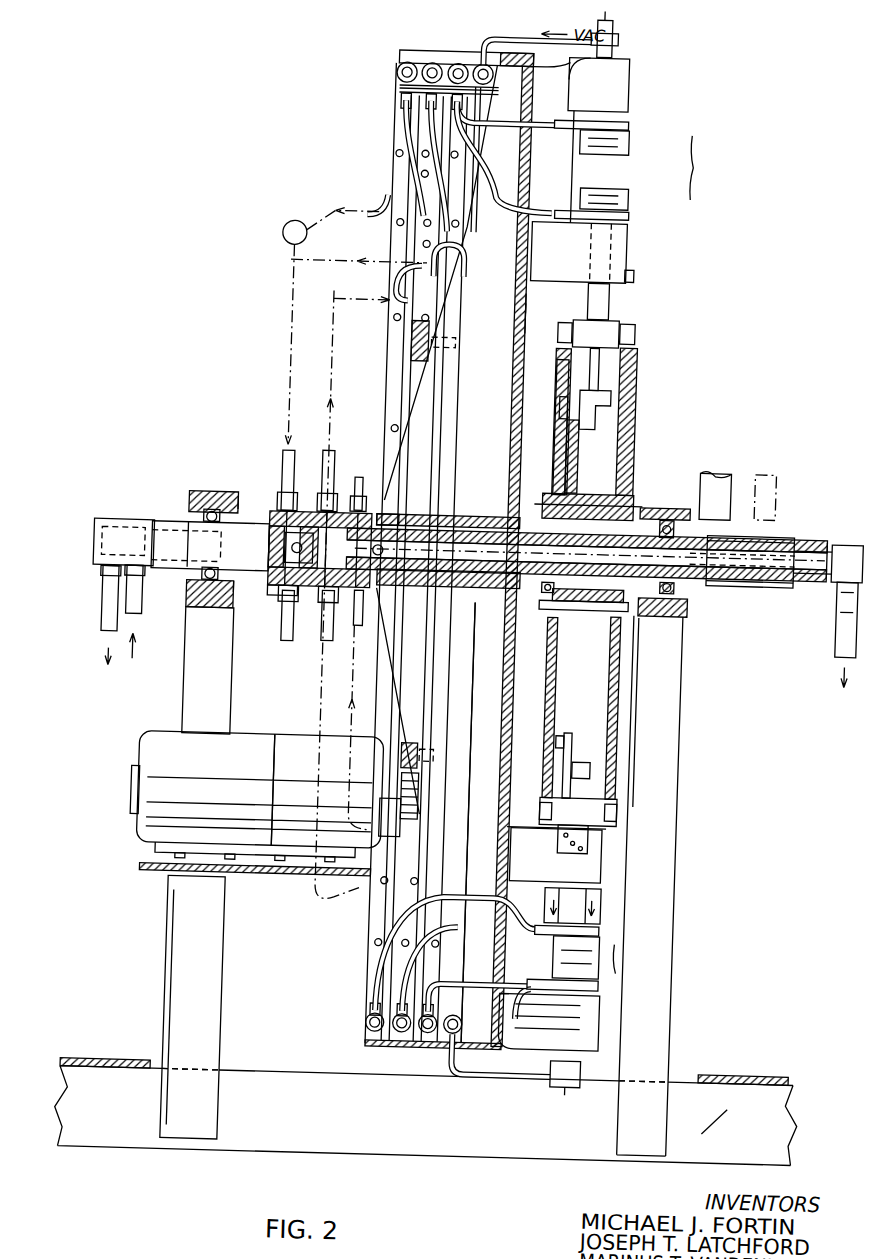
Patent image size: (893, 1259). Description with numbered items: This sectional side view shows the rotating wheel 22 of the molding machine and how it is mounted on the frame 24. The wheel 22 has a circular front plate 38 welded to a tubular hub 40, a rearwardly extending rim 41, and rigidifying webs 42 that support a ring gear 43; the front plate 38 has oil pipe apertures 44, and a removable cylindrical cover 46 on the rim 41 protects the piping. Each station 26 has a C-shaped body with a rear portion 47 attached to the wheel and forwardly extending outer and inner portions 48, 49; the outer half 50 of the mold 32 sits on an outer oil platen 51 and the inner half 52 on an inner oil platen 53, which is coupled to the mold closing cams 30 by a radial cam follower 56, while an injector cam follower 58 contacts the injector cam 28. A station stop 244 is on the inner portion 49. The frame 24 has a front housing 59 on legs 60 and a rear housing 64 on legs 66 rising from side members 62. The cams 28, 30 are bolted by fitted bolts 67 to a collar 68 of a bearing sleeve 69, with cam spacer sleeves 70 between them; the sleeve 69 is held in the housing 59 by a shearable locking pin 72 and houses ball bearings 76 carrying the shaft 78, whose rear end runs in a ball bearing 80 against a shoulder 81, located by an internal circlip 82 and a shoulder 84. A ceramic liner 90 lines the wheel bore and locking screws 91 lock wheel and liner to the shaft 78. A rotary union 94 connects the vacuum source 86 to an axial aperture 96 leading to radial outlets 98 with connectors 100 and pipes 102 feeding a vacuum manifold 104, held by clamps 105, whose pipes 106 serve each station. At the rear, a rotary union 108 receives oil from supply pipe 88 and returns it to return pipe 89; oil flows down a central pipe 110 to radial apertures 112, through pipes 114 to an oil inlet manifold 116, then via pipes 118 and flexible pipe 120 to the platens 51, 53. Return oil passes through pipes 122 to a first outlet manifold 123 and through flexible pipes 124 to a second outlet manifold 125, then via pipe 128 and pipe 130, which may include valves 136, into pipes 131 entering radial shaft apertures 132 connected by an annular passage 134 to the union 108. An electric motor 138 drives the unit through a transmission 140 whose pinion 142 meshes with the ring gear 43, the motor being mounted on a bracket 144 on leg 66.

The wheel 22 is at (547, 303).
The frame 24 is at (749, 1057).
The station 26 is at (699, 124).
The injector cam 28 is at (590, 478).
The mold closing cams 30 is at (632, 740).
The mold 32 is at (696, 168).
The front plate 38 is at (530, 322).
The tubular hub 40 is at (520, 514).
The rim 41 is at (535, 63).
The rigidifying webs 42 is at (503, 379).
The ring gear 43 is at (440, 320).
The oil pipe apertures 44 is at (521, 172).
The cylindrical cover 46 is at (405, 52).
The rear portion 47 is at (573, 184).
The outer portion 48 is at (607, 102).
The inner portion 49 is at (575, 262).
The outer half 50 is at (632, 140).
The outer oil platen 51 is at (605, 118).
The inner half 52 is at (633, 190).
The inner oil platen 53 is at (634, 214).
The radial cam follower 56 is at (617, 298).
The injector cam follower 58 is at (608, 365).
The front housing 59 is at (728, 623).
The legs 60 is at (701, 815).
The longitudinal side members 62 is at (484, 1146).
The rear housing 64 is at (192, 482).
The legs 66 is at (186, 1008).
The fitted bolts 67 is at (643, 488).
The collar 68 is at (556, 495).
The bearing sleeve 69 is at (672, 612).
The cam spacer sleeves 70 is at (610, 612).
The locking pin 72 is at (665, 502).
The ball bearings 76 is at (684, 515).
The shaft 78 is at (511, 569).
The ball bearing 80 is at (222, 514).
The shoulder 81 is at (210, 545).
The internal circlip 82 is at (205, 520).
The shoulder 84 is at (242, 512).
The vacuum source 86 is at (853, 630).
The supply pipe 88 is at (158, 605).
The return pipe 89 is at (118, 615).
The ceramic liner 90 is at (452, 514).
The locking screws 91 is at (405, 520).
The rotary union 94 is at (862, 533).
The elongated axial aperture 96 is at (700, 570).
The radial distribution outlets 98 is at (378, 514).
The connectors 100 is at (372, 514).
The pipes 102 is at (350, 514).
The vacuum manifold 104 is at (483, 62).
The clamps 105 is at (430, 90).
The pipes 106 is at (612, 22).
The inlet/outlet rotary union 108 is at (115, 545).
The central rotary union pipe 110 is at (282, 540).
The radial distribution apertures 112 is at (372, 478).
The pipes 114 is at (327, 594).
The oil inlet manifold 116 is at (430, 64).
The pipes 118 is at (470, 130).
The pipe 120 is at (445, 162).
The pipes 122 is at (465, 118).
The first oil outlet manifold 123 is at (456, 62).
The flexible pipes 124 is at (430, 195).
The second oil outlet manifold 125 is at (397, 72).
The pipe 128 is at (420, 265).
The oil pipe 130 is at (380, 218).
The pipes 131 is at (292, 470).
The radial shaft apertures 132 is at (338, 475).
The annular passage 134 is at (295, 590).
The valves 136 is at (286, 228).
The electric motor 138 is at (233, 804).
The transmission 140 is at (310, 760).
The pinion 142 is at (430, 790).
The bracket 144 is at (200, 905).
The station stop 244 is at (641, 270).